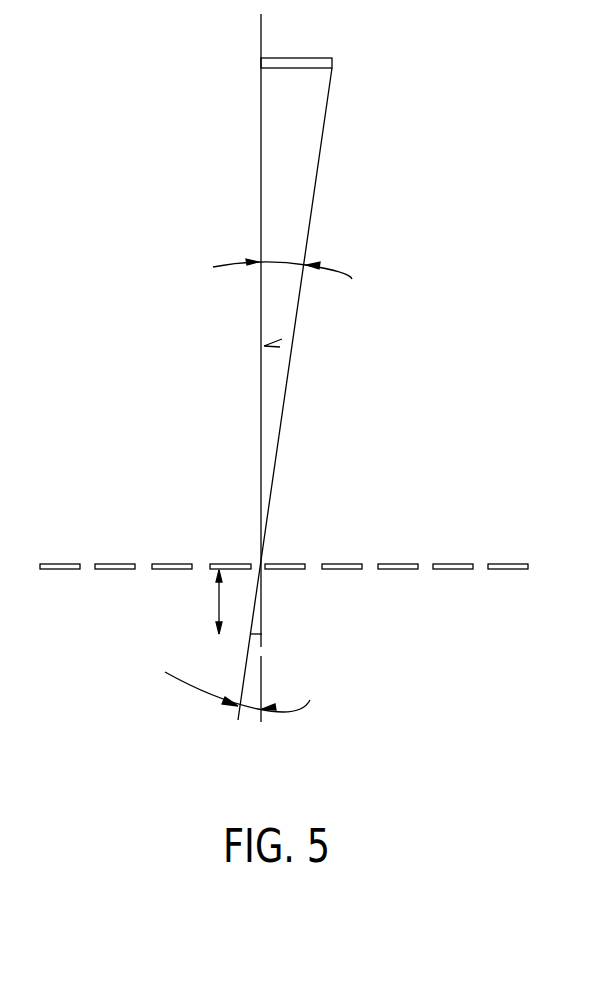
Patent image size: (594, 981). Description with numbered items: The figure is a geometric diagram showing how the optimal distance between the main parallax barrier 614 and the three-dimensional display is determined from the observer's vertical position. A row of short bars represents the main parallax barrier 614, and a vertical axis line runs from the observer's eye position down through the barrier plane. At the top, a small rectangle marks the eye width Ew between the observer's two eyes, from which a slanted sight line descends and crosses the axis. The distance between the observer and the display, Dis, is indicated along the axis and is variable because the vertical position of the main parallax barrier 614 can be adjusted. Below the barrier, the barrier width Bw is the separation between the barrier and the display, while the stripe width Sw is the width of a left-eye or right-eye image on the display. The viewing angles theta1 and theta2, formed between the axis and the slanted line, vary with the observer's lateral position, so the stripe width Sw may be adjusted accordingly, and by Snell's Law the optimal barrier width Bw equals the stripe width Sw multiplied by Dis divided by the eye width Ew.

The main parallax barrier 614 is at (59, 562).
The eye width Ew is at (358, 61).
The barrier width Bw is at (132, 606).
The stripe width Sw is at (332, 631).
The distance between observer and 3D display Dis is at (264, 346).
The viewing angle theta1 is at (282, 254).
The viewing angle theta2 is at (237, 680).